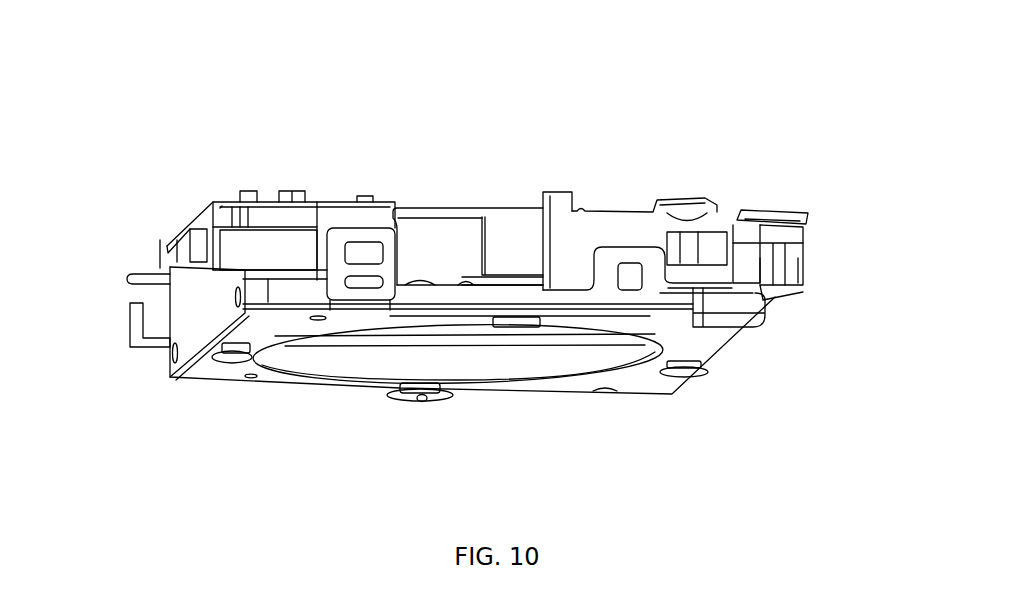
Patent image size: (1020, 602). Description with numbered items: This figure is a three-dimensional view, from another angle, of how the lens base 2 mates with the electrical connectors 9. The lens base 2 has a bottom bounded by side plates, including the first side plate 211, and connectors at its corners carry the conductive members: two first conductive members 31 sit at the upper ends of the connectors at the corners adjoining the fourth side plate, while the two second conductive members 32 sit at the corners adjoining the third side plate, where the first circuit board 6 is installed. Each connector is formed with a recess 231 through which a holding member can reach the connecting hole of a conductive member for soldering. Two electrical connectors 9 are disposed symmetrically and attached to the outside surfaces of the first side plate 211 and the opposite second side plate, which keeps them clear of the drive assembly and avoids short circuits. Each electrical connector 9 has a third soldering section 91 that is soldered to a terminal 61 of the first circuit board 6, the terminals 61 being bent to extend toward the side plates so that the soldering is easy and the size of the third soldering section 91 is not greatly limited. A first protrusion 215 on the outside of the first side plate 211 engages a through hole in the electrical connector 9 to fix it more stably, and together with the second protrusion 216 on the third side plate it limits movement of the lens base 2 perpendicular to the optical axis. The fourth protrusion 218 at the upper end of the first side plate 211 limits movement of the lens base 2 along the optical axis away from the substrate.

The lens base 2 is at (502, 38).
The first circuit board 6 is at (213, 313).
The electrical connector 9 is at (603, 295).
The first conductive member 31 is at (793, 182).
The second conductive member 32 is at (152, 272).
The terminal 61 is at (348, 303).
The third soldering section 91 is at (357, 295).
The first side plate 211 is at (643, 223).
The first protrusion 215 is at (630, 283).
The second protrusion 216 is at (192, 224).
The fourth protrusion 218 is at (553, 202).
The recess 231 is at (770, 263).